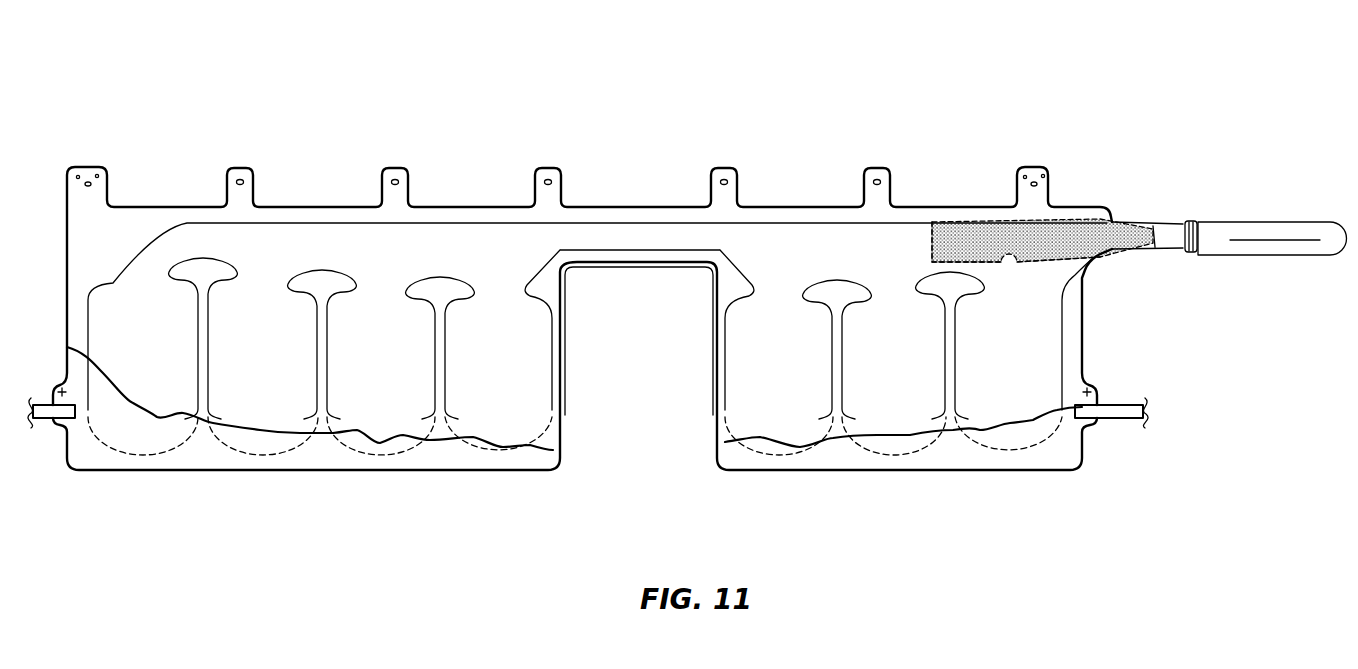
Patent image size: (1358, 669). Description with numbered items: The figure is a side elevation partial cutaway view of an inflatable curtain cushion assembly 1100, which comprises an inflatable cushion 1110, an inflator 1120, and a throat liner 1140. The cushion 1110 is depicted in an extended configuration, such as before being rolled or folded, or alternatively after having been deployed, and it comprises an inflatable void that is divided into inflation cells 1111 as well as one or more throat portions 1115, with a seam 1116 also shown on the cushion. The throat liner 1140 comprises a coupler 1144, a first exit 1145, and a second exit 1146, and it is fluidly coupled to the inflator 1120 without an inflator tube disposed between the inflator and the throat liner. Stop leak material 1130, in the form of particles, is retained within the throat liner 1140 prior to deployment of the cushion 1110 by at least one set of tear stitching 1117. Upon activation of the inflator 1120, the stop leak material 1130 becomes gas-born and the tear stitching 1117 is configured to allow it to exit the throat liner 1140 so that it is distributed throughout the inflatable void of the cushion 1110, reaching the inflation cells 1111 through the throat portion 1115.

The inflatable curtain cushion assembly 1100 is at (795, 84).
The inflatable cushion 1110 is at (88, 223).
The inflation cells 1111 is at (383, 307).
The throat portion 1115 is at (1093, 258).
The seam 1116 is at (260, 455).
The tear stitching 1117 is at (927, 240).
The inflator 1120 is at (1260, 230).
The stop leak material 1130 is at (1037, 237).
The throat liner 1140 is at (1127, 215).
The coupler 1144 is at (1190, 257).
The first exit 1145 is at (925, 258).
The second exit 1146 is at (1035, 270).